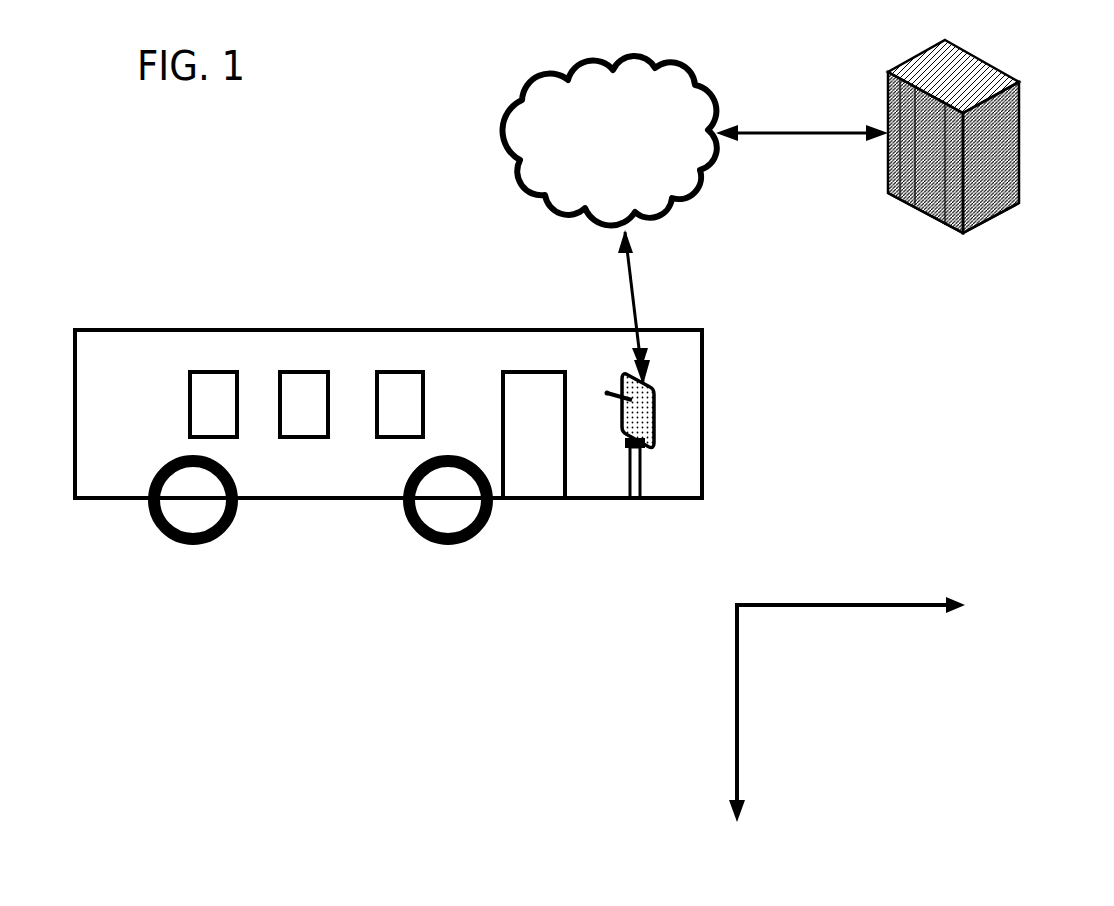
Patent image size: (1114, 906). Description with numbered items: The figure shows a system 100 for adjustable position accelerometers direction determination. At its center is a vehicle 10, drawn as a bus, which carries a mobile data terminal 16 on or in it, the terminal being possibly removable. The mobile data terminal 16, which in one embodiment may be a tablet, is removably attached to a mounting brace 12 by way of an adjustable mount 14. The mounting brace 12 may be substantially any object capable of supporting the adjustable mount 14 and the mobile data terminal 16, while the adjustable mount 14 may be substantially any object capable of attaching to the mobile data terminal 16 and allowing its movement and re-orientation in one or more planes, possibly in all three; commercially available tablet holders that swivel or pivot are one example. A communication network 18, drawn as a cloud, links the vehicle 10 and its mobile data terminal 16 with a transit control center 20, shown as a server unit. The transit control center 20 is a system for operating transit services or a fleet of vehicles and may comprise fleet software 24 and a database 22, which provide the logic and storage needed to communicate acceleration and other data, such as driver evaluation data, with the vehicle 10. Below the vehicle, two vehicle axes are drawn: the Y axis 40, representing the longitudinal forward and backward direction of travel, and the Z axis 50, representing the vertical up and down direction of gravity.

The system 100 is at (275, 220).
The vehicle 10 is at (352, 330).
The mounting brace 12 is at (643, 467).
The adjustable mount 14 is at (627, 440).
The mobile data terminal 16 is at (660, 403).
The communication network 18 is at (692, 62).
The transit control center 20 is at (900, 202).
The database 22 is at (960, 212).
The fleet software 24 is at (994, 159).
The vehicle axis Y 40 is at (748, 600).
The vehicle axis Z 50 is at (728, 637).